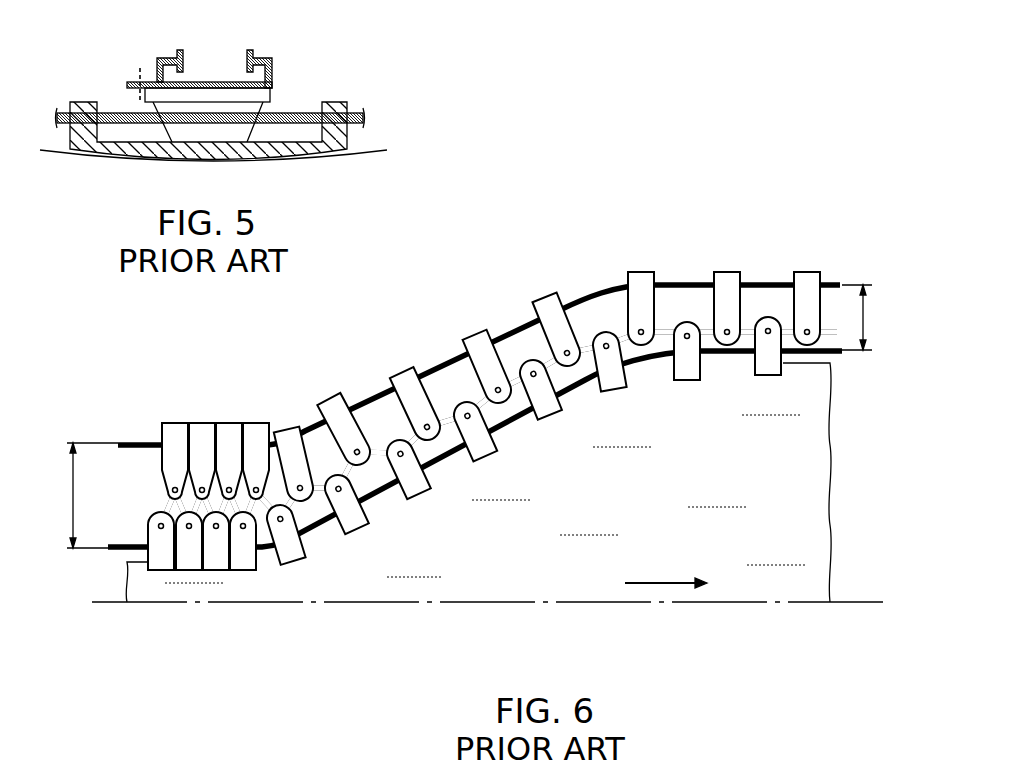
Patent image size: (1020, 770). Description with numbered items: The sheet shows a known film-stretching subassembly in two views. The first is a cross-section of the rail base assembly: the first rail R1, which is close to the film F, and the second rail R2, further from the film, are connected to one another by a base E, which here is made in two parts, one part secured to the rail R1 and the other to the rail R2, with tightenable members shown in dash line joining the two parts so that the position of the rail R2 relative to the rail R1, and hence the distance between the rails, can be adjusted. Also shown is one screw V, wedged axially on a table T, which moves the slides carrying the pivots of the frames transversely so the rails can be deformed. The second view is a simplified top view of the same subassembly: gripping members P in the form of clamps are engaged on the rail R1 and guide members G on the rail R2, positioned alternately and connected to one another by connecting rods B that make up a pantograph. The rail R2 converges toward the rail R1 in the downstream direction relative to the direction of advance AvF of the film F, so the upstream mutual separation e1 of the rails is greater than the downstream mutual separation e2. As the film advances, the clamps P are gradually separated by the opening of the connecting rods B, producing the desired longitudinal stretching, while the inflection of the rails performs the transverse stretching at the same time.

In FIG. 5, the first rail R1 is at (252, 52).
In FIG. 6, the first rail R1 is at (118, 548).
In FIG. 5, the second rail R2 is at (178, 50).
In FIG. 6, the second rail R2 is at (143, 438).
In FIG. 5, the base E is at (136, 76).
In FIG. 5, the table T is at (78, 102).
In FIG. 5, the screw V is at (313, 112).
In FIG. 6, the guide members G is at (230, 430).
In FIG. 6, the connecting rods B is at (347, 468).
In FIG. 6, the gripping members P is at (247, 562).
In FIG. 6, the film F is at (810, 442).
In FIG. 6, the upstream mutual separation e1 is at (54, 495).
In FIG. 6, the downstream mutual separation e2 is at (875, 317).
In FIG. 6, the direction of advance AvF is at (660, 583).